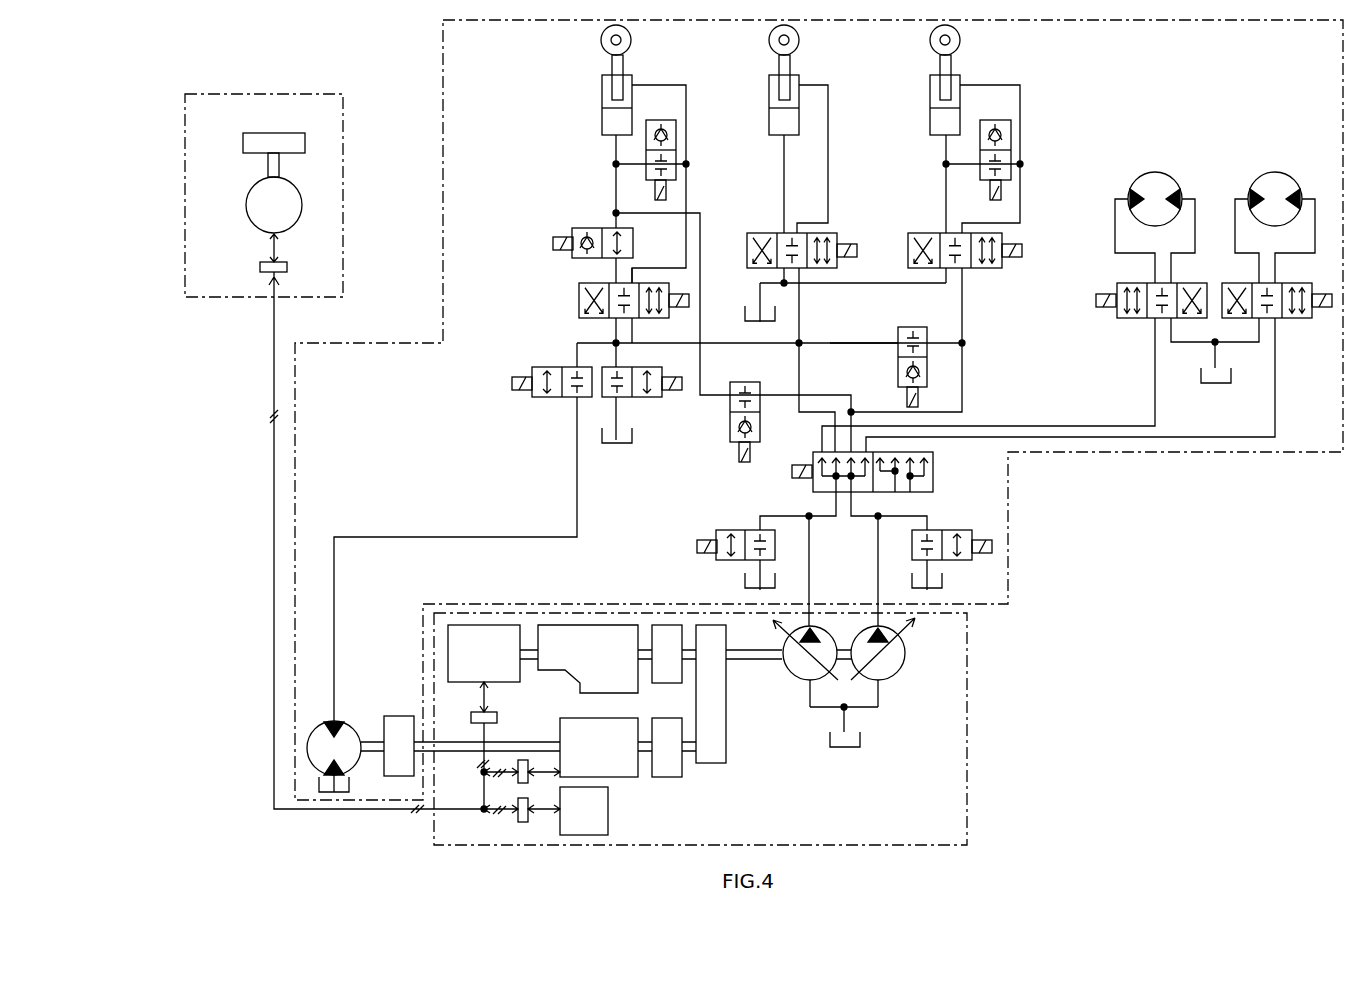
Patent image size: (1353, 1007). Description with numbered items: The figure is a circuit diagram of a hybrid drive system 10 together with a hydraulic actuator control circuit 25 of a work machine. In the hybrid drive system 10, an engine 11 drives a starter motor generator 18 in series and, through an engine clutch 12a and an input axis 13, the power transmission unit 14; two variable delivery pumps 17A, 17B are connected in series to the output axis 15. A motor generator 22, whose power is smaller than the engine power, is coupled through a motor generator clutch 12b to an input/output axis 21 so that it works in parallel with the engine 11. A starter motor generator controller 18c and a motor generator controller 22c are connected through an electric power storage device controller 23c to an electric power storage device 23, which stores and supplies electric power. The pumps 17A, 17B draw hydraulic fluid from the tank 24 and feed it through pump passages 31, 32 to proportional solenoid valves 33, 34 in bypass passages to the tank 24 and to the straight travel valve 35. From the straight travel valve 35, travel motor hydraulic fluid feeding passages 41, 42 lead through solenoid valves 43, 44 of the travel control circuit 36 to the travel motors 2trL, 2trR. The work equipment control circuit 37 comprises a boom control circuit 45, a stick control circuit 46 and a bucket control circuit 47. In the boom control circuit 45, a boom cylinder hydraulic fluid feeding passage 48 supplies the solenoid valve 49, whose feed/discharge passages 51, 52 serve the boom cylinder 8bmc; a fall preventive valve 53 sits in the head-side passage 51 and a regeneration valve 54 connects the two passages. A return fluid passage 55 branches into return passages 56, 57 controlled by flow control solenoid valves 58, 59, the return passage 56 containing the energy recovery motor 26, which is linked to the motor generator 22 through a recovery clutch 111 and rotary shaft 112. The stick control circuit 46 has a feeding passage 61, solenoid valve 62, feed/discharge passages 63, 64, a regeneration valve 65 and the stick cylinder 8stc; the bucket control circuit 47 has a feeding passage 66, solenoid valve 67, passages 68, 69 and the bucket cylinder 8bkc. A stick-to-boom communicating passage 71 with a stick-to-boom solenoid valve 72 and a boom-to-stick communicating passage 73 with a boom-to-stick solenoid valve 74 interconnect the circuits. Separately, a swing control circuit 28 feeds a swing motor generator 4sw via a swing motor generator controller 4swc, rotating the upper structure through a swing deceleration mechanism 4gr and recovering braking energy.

The swing control circuit 28 is at (296, 96).
The swing deceleration mechanism 4gr is at (284, 135).
The swing motor generator 4sw is at (290, 190).
The swing motor generator controller 4swc is at (287, 263).
The hydraulic actuator control circuit 25 is at (1010, 481).
The work equipment control circuit 37 is at (1060, 49).
The hybrid drive system 10 is at (967, 640).
The boom control circuit 45 is at (555, 61).
The boom cylinder 8bmc is at (628, 76).
The head-side hydraulic fluid feed/discharge passage 51 is at (614, 198).
The regeneration valve 54 is at (668, 122).
The rod-side hydraulic fluid feed/discharge passage 52 is at (690, 198).
The circuit-to-circuit communicating passage from stick to boom 71 is at (712, 230).
The fall preventive valve 53 is at (578, 228).
The boom solenoid valve 49 is at (574, 298).
The boom cylinder hydraulic fluid feeding passage 48 is at (740, 346).
The return fluid passage 55 is at (568, 332).
The return passage 56 is at (564, 360).
The flow control solenoid valve 58 is at (528, 400).
The return passage 57 is at (624, 367).
The flow control solenoid valve 59 is at (658, 397).
The stick-to-boom solenoid valve 72 is at (728, 440).
The bucket control circuit 47 is at (735, 61).
The bucket cylinder 8bkc is at (797, 76).
The hydraulic fluid feed/discharge passage 68 is at (777, 198).
The hydraulic fluid feed/discharge passage 69 is at (828, 194).
The bucket solenoid valve 67 is at (830, 234).
The bucket cylinder hydraulic fluid feeding passage 66 is at (799, 311).
The circuit-to-circuit communicating passage from boom to stick 73 is at (844, 343).
The boom-to-stick solenoid valve 74 is at (920, 322).
The stick cylinder hydraulic fluid feeding passage 61 is at (964, 366).
The stick control circuit 46 is at (897, 61).
The stick cylinder 8stc is at (957, 76).
The hydraulic fluid feed/discharge passage 63 is at (940, 198).
The regeneration valve 65 is at (1001, 122).
The hydraulic fluid feed/discharge passage 64 is at (1022, 140).
The stick solenoid valve 62 is at (976, 282).
The travel control circuit 36 is at (1261, 93).
The travel motor 2trL is at (1151, 162).
The solenoid valve 43 is at (1120, 284).
The travel motor hydraulic fluid feeding passage 41 is at (1154, 386).
The travel motor 2trR is at (1278, 162).
The solenoid valve 44 is at (1300, 284).
The travel motor hydraulic fluid feeding passage 42 is at (1279, 382).
The straight travel valve 35 is at (934, 468).
The pump passage 31 is at (816, 512).
The pump passage 32 is at (889, 557).
The proportional solenoid valve 33 is at (718, 532).
The proportional solenoid valve 34 is at (960, 534).
The starter motor generator 18 is at (518, 674).
The engine 11 is at (592, 694).
The engine clutch 12a is at (660, 684).
The input axis 13 is at (689, 662).
The power transmission unit 14 is at (725, 714).
The output axis 15 is at (760, 666).
The pump 17A is at (803, 686).
The pump 17B is at (885, 686).
The motor generator 22 is at (623, 780).
The motor generator clutch 12b is at (666, 780).
The input/output axis 21 is at (692, 756).
The electric power storage device 23 is at (606, 822).
The energy recovery motor 26 is at (337, 722).
The recovery clutch 111 is at (401, 716).
The rotary shaft 112 is at (447, 742).
The starter motor generator controller 18c is at (496, 716).
The motor generator controller 22c is at (522, 762).
The electric power storage device controller 23c is at (518, 823).
The tank 24 is at (636, 432).